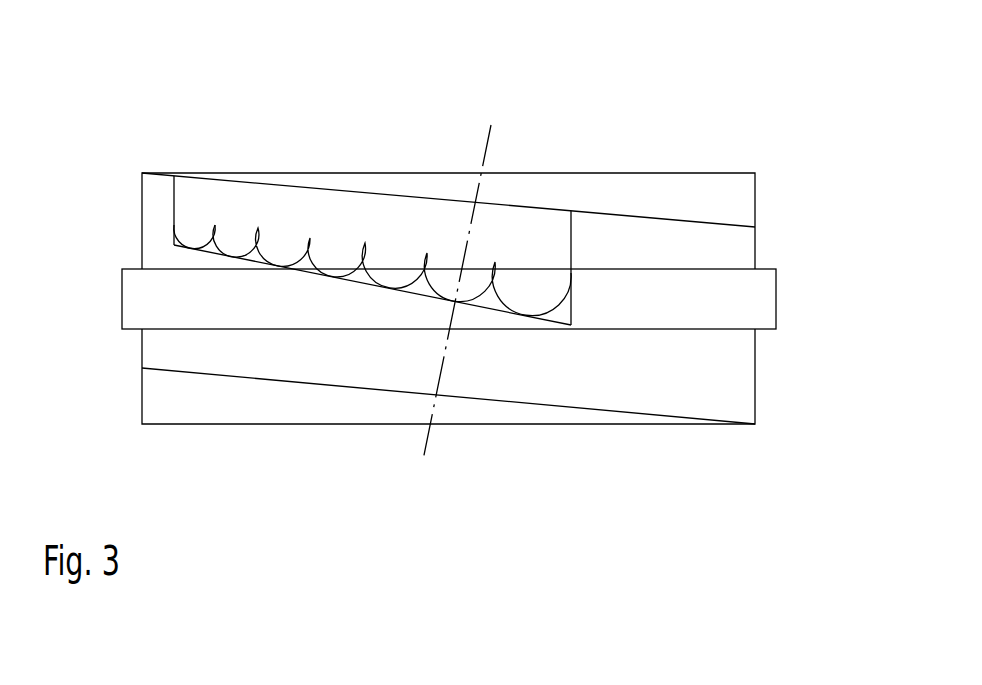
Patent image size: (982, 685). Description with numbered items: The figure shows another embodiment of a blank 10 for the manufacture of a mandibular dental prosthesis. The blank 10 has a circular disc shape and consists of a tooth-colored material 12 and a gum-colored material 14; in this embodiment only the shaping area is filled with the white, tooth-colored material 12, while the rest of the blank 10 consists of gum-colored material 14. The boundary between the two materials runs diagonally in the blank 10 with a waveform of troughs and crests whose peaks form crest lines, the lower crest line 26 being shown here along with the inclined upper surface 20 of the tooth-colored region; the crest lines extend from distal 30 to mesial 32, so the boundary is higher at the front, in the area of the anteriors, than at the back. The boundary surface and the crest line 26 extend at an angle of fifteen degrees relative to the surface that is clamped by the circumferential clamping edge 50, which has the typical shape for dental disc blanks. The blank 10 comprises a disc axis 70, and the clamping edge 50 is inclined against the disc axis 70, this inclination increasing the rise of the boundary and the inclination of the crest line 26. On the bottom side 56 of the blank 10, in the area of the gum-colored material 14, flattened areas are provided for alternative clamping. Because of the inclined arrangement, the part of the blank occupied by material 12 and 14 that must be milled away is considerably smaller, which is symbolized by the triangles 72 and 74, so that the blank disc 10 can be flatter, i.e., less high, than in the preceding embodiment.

The blank 10 is at (385, 96).
The tooth-colored material 12 is at (508, 223).
The gum-colored material 14 is at (627, 235).
The inclined contact surface 20 is at (540, 197).
The lower crest line 26 is at (360, 283).
The distal 30 is at (520, 312).
The mesial 32 is at (199, 206).
The clamping edge 50 is at (765, 299).
The bottom side 56 is at (450, 408).
The disc axis 70 is at (486, 147).
The triangle 72 is at (714, 188).
The triangle 74 is at (175, 405).